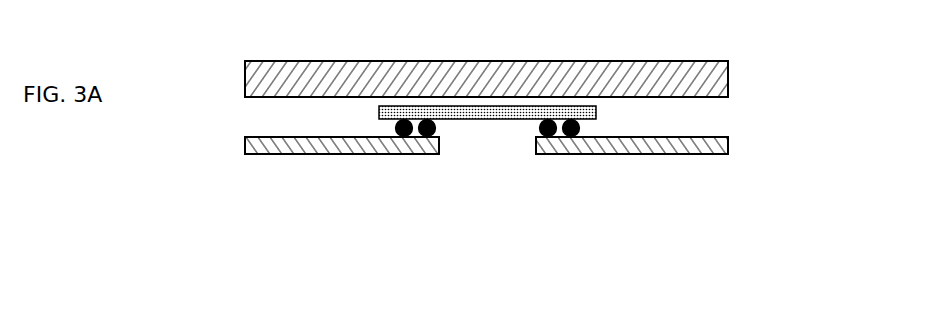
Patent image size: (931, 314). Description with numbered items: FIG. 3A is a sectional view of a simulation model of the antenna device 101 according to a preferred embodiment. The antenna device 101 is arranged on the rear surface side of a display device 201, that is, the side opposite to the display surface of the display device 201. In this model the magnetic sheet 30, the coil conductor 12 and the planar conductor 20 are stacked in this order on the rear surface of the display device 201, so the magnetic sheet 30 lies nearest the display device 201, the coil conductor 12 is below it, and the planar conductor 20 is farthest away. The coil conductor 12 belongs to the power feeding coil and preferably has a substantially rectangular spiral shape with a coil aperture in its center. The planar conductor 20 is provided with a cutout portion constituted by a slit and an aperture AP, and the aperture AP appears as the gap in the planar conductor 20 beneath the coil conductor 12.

The display device 201 is at (720, 78).
The magnetic sheet 30 is at (596, 113).
The coil conductor 12 is at (579, 127).
The planar conductor 20 is at (720, 146).
The antenna device 101 is at (802, 108).
The aperture AP is at (493, 151).